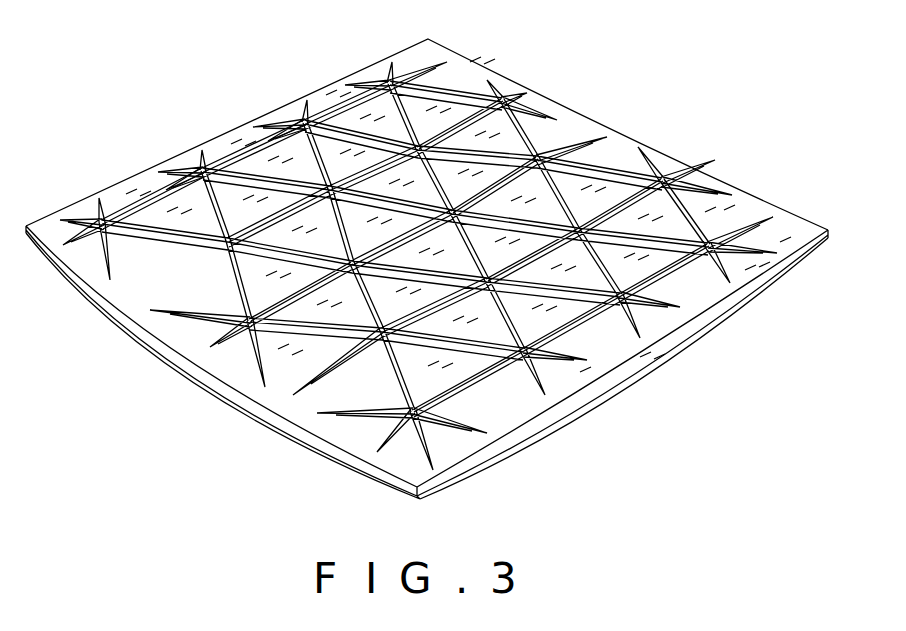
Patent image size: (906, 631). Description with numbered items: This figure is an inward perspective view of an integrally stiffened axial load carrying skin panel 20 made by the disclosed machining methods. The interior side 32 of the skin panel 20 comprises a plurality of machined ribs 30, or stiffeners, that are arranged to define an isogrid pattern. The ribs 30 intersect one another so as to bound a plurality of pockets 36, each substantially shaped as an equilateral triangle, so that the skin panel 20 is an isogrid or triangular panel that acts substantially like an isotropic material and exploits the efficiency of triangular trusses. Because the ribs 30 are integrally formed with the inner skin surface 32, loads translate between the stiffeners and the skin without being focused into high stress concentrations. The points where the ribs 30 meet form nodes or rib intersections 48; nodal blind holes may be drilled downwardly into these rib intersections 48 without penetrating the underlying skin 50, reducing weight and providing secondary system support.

The skin panel 20 is at (275, 85).
The ribs 30 is at (377, 187).
The interior side 32 is at (147, 328).
The pockets 36 is at (425, 262).
The rib intersections 48 is at (217, 342).
The skin 50 is at (523, 425).